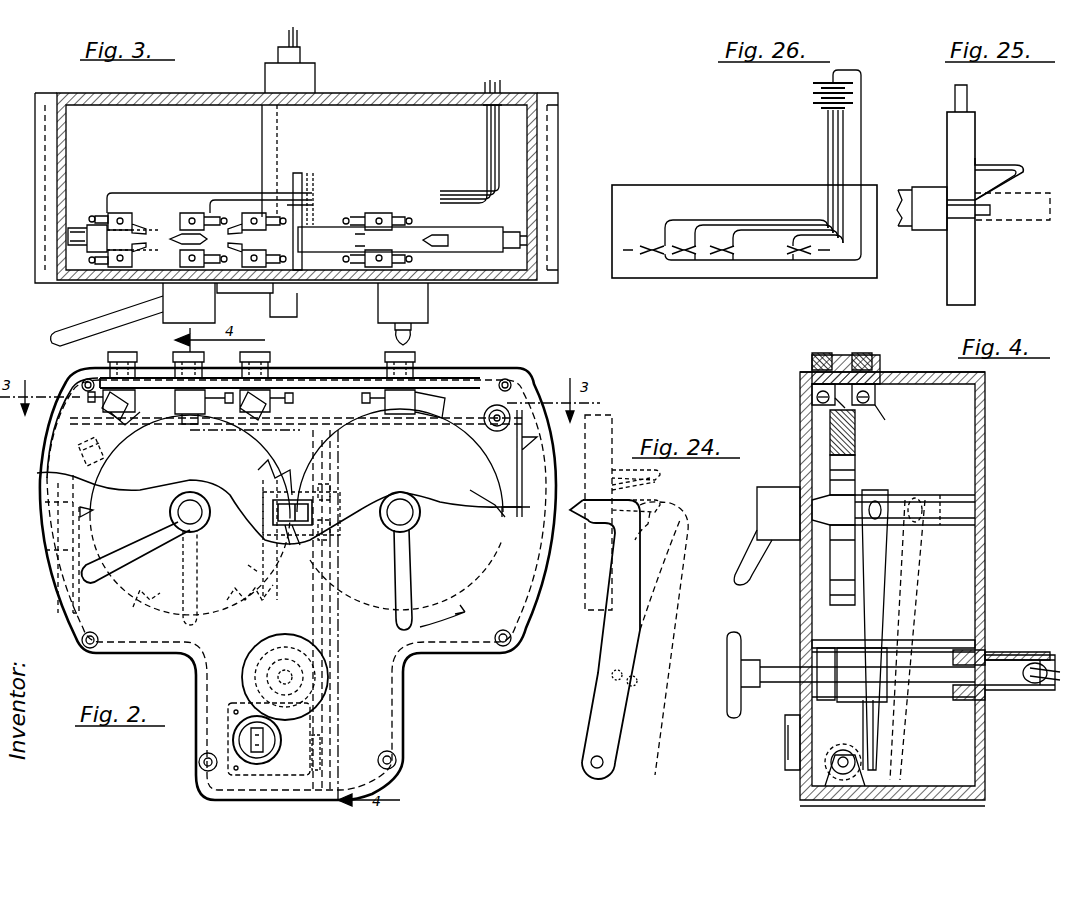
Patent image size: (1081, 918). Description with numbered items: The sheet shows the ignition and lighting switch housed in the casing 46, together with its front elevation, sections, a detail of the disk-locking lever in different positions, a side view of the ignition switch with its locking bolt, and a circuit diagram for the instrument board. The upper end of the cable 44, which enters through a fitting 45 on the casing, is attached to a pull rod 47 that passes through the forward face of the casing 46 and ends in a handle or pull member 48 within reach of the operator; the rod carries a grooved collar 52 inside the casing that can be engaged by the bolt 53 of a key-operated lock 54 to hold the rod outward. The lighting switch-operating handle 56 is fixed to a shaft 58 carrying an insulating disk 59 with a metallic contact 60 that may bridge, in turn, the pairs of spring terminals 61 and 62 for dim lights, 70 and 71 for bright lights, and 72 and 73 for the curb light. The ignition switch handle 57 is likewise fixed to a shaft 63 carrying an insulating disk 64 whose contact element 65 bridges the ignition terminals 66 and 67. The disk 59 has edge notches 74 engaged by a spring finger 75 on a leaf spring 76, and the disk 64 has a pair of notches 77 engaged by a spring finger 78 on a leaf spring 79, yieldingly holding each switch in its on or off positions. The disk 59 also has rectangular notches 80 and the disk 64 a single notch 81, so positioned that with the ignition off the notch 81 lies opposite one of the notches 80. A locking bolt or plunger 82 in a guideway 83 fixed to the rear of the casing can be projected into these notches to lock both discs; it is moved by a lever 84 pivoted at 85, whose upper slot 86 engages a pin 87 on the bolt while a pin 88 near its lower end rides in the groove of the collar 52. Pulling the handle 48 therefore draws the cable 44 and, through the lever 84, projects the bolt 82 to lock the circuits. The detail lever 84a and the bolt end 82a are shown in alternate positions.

In FIG. 3, the cable 44 is at (298, 36).
In FIG. 4, the cable 44 is at (1052, 685).
In FIG. 3, the cable cap 45 is at (302, 58).
In FIG. 4, the cable cap 45 is at (1035, 655).
In FIG. 3, the casing 46 is at (400, 98).
In FIG. 2, the casing 46 is at (440, 632).
In FIG. 4, the casing 46 is at (905, 372).
In FIG. 4, the pull rod 47 is at (922, 682).
In FIG. 2, the handle or pull member 48 is at (245, 668).
In FIG. 4, the handle or pull member 48 is at (727, 690).
In FIG. 4, the grooved collar 52 is at (880, 710).
In FIG. 4, the bolt 53 is at (844, 750).
In FIG. 2, the lock 54 is at (245, 740).
In FIG. 4, the lock 54 is at (820, 725).
In FIG. 3, the lighting switch-operating handle 56 is at (80, 321).
In FIG. 2, the lighting switch-operating handle 56 is at (93, 578).
In FIG. 4, the lighting switch-operating handle 56 is at (742, 576).
In FIG. 3, the ignition switch handle 57 is at (412, 336).
In FIG. 2, the ignition switch handle 57 is at (410, 595).
In FIG. 3, the shaft 58 is at (180, 324).
In FIG. 2, the shaft 58 is at (170, 512).
In FIG. 4, the shaft 58 is at (757, 510).
In FIG. 3, the disk of insulating material 59 is at (158, 236).
In FIG. 2, the disk of insulating material 59 is at (283, 448).
In FIG. 24, the disk of insulating material 59 is at (592, 465).
In FIG. 4, the disk of insulating material 59 is at (838, 488).
In FIG. 3, the metallic contact 60 is at (177, 241).
In FIG. 2, the metallic contact 60 is at (175, 398).
In FIG. 3, the spring terminal 61 is at (190, 259).
In FIG. 2, the spring terminal 61 is at (192, 416).
In FIG. 4, the spring terminal 61 is at (815, 393).
In FIG. 3, the spring terminal 62 is at (188, 211).
In FIG. 4, the spring terminal 62 is at (872, 408).
In FIG. 3, the shaft 63 is at (392, 328).
In FIG. 2, the shaft 63 is at (420, 515).
In FIG. 3, the disk of insulating material 64 is at (470, 245).
In FIG. 2, the disk of insulating material 64 is at (296, 518).
In FIG. 3, the metallic contact element 65 is at (435, 236).
In FIG. 2, the metallic contact element 65 is at (432, 402).
In FIG. 3, the terminal 66 is at (363, 240).
In FIG. 2, the terminal 66 is at (400, 416).
In FIG. 3, the terminal 67 is at (385, 211).
In FIG. 3, the terminal 70 is at (243, 268).
In FIG. 2, the terminal 70 is at (262, 416).
In FIG. 3, the terminal 71 is at (250, 211).
In FIG. 3, the terminal 72 is at (120, 265).
In FIG. 2, the terminal 72 is at (115, 412).
In FIG. 3, the terminal 73 is at (124, 211).
In FIG. 2, the notches or depressions 74 is at (100, 470).
In FIG. 2, the spring finger 75 is at (45, 502).
In FIG. 2, the leaf spring 76 is at (45, 550).
In FIG. 2, the notches 77 is at (489, 531).
In FIG. 2, the spring finger 78 is at (515, 505).
In FIG. 2, the leaf spring 79 is at (520, 430).
In FIG. 2, the rectangular notches 80 is at (275, 506).
In FIG. 2, the notch 81 is at (310, 510).
In FIG. 2, the locking bolt or plunger 82 is at (292, 528).
In FIG. 4, the locking bolt or plunger 82 is at (850, 510).
In FIG. 24, the pawl fork 82a is at (585, 512).
In FIG. 4, the guideway 83 is at (940, 495).
In FIG. 2, the lever 84 is at (332, 618).
In FIG. 4, the lever 84 is at (918, 585).
In FIG. 24, the lever 84a is at (670, 555).
In FIG. 2, the pivot 85 is at (322, 760).
In FIG. 24, the pivot 85 is at (604, 763).
In FIG. 4, the pivot 85 is at (835, 770).
In FIG. 4, the slot 86 is at (876, 522).
In FIG. 4, the pin 87 is at (885, 498).
In FIG. 2, the pin 88 is at (312, 635).
In FIG. 24, the pin 88 is at (612, 678).
In FIG. 4, the pin 88 is at (905, 660).